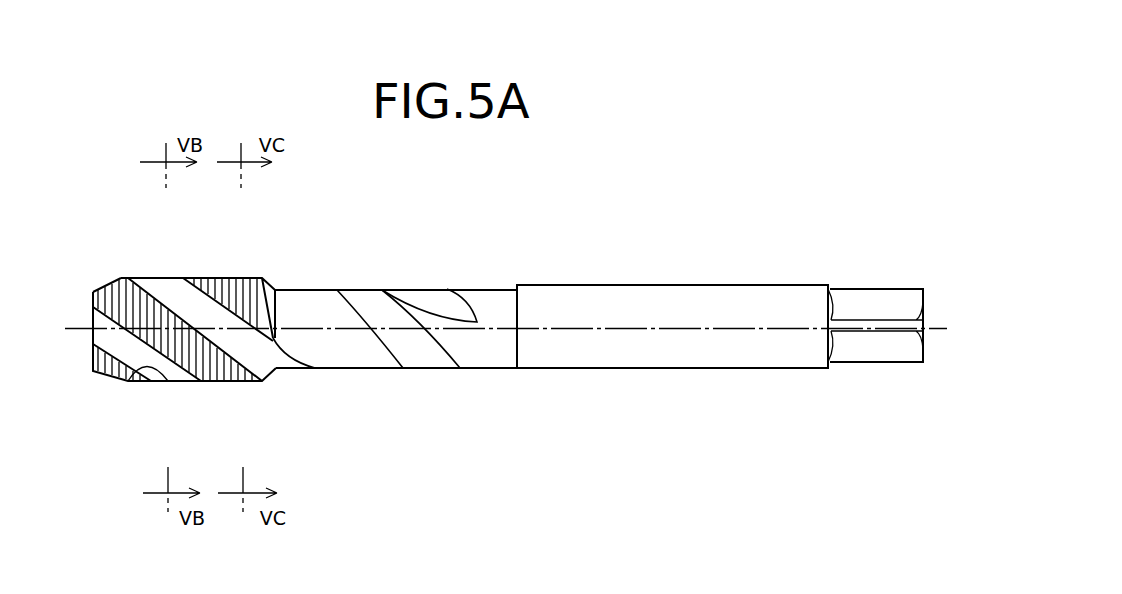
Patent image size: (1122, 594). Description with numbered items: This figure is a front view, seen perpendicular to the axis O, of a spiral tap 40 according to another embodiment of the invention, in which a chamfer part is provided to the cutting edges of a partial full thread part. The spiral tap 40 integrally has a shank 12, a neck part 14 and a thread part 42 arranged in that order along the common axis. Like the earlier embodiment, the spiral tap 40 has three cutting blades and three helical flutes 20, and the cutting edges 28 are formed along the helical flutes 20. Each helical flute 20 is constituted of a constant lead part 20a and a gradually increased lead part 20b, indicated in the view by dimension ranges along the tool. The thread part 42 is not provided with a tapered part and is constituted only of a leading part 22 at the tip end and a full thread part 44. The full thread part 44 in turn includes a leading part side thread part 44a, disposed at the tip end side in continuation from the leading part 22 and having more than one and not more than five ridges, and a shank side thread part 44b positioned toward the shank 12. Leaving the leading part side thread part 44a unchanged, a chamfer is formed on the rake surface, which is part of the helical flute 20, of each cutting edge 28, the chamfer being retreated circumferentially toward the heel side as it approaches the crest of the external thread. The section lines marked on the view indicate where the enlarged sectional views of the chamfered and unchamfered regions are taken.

The spiral tap 40 is at (737, 224).
The shank 12 is at (702, 352).
The neck part 14 is at (487, 303).
The helical flute 20 is at (265, 355).
The constant lead part 20a is at (95, 380).
The gradually increased lead part 20b is at (208, 420).
The leading part 22 is at (127, 244).
The cutting edge 28 is at (136, 278).
The thread part 42 is at (115, 390).
The full thread part 44 is at (275, 265).
The leading part side thread part 44a is at (132, 244).
The shank side thread part 44b is at (180, 244).